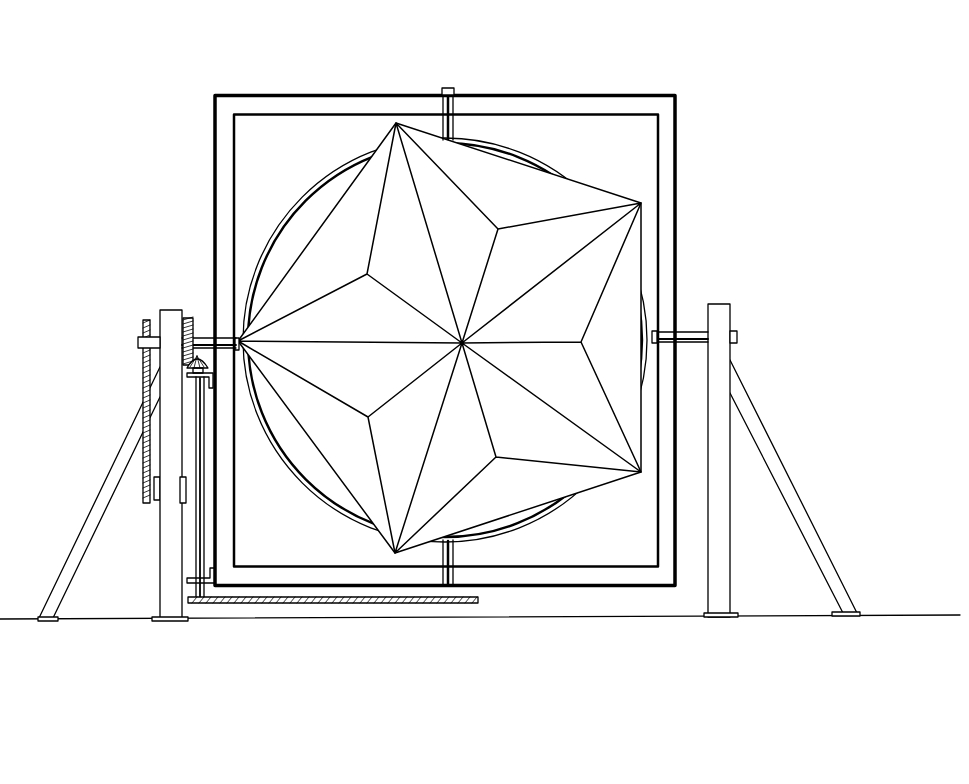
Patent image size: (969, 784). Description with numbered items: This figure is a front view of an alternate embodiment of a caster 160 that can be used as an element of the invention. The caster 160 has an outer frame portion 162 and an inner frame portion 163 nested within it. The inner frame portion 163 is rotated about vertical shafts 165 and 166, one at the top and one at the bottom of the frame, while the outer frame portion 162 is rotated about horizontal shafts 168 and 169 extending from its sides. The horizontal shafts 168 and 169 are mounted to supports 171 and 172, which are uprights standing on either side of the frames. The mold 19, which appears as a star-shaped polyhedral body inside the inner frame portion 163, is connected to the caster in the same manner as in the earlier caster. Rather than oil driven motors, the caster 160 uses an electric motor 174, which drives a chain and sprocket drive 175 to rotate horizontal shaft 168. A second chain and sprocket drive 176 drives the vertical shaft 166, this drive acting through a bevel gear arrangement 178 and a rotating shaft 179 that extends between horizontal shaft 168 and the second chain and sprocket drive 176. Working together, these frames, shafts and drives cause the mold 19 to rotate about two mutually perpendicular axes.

The caster 160 is at (176, 71).
The outer frame portion 162 is at (213, 219).
The inner frame portion 163 is at (548, 157).
The vertical shaft 165 is at (455, 92).
The vertical shaft 166 is at (460, 553).
The horizontal shaft 168 is at (188, 318).
The horizontal shaft 169 is at (690, 331).
The support 171 is at (159, 568).
The support 172 is at (730, 358).
The electric motor 174 is at (157, 501).
The chain and sprocket drive 175 is at (143, 382).
The second chain and sprocket drive 176 is at (302, 597).
The bevel gear arrangement 178 is at (182, 367).
The rotating shaft 179 is at (205, 508).
The mold 19 is at (521, 203).